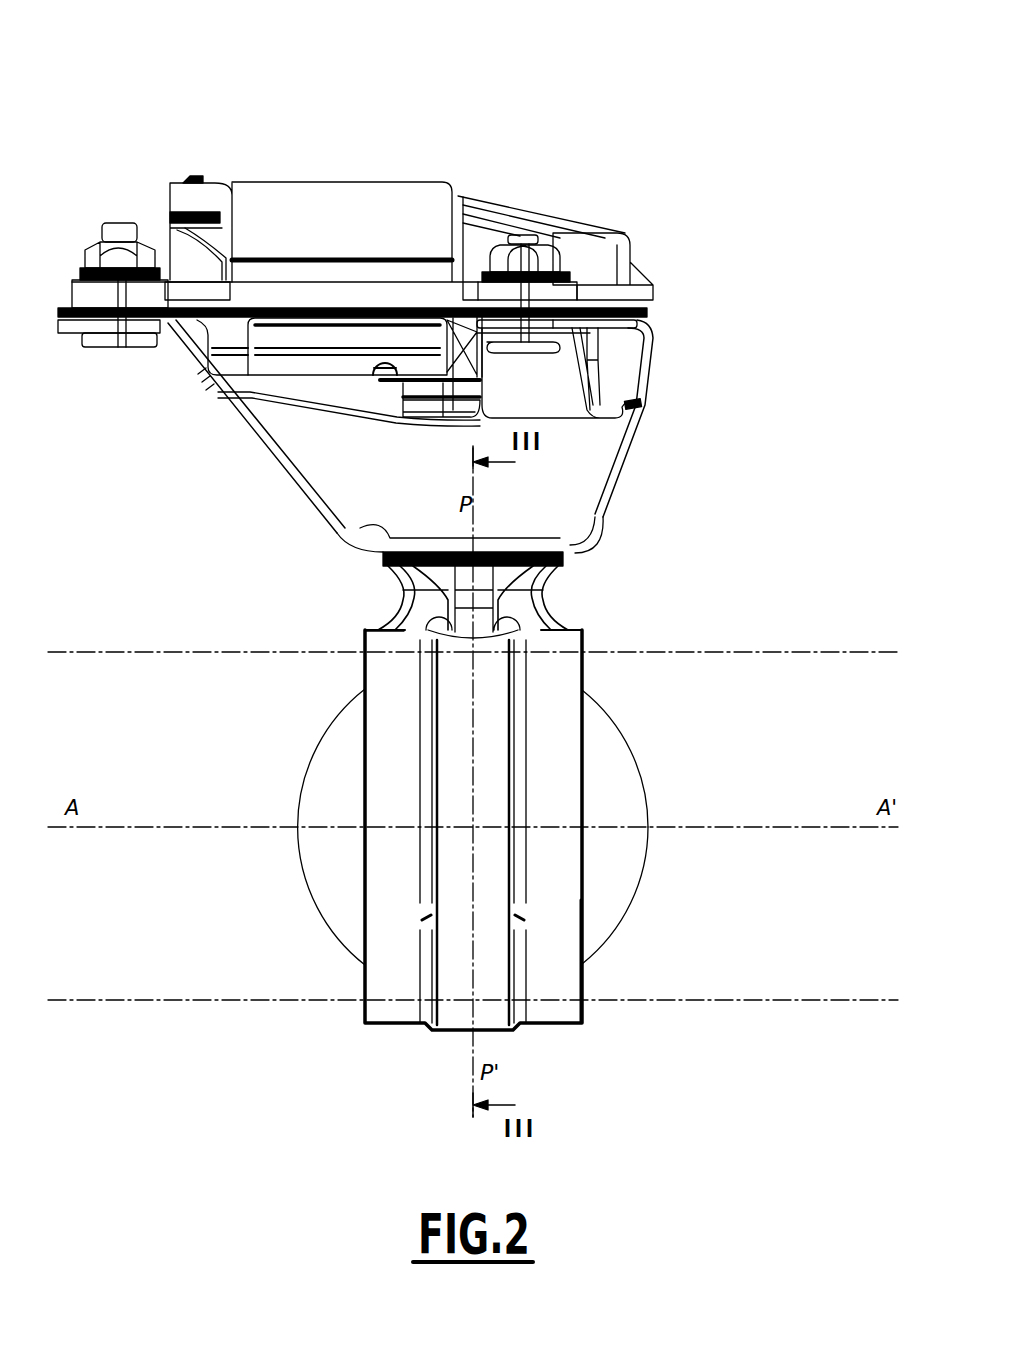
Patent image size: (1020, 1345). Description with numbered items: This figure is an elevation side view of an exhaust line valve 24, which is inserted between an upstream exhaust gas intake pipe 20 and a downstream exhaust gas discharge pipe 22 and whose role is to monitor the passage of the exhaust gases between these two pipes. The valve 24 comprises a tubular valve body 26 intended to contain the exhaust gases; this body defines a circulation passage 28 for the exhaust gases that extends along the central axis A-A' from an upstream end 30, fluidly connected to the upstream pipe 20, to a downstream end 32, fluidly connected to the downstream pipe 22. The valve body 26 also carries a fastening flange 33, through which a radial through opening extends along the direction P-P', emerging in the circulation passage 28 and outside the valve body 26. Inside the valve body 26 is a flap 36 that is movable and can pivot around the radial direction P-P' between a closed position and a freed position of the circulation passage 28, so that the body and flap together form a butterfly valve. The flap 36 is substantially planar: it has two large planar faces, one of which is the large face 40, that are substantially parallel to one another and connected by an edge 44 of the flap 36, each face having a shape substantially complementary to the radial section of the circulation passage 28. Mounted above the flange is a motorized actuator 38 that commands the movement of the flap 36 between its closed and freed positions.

The upstream exhaust gas intake pipe 20 is at (858, 672).
The downstream exhaust gas discharge pipe 22 is at (88, 672).
The valve 24 is at (581, 152).
The tubular valve body 26 is at (400, 998).
The circulation passage 28 is at (610, 978).
The upstream end 30 is at (582, 677).
The downstream end 32 is at (365, 668).
The fastening flange 33 is at (578, 601).
The flap 36 is at (612, 745).
The motorized actuator 38 is at (675, 253).
The large face 40 is at (612, 862).
The edge 44 is at (312, 895).